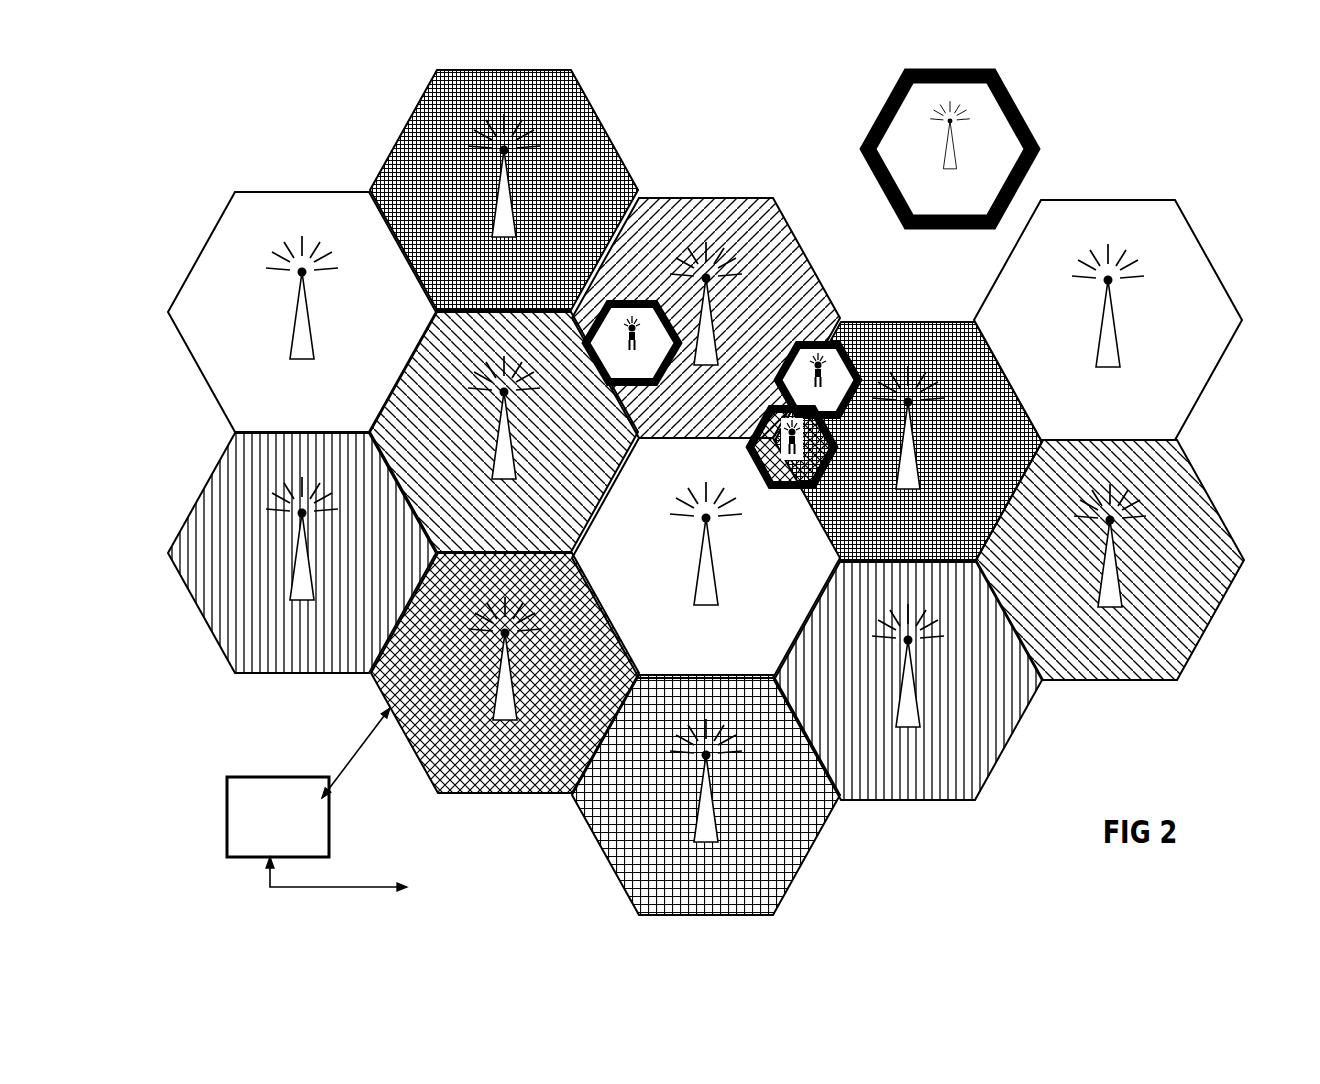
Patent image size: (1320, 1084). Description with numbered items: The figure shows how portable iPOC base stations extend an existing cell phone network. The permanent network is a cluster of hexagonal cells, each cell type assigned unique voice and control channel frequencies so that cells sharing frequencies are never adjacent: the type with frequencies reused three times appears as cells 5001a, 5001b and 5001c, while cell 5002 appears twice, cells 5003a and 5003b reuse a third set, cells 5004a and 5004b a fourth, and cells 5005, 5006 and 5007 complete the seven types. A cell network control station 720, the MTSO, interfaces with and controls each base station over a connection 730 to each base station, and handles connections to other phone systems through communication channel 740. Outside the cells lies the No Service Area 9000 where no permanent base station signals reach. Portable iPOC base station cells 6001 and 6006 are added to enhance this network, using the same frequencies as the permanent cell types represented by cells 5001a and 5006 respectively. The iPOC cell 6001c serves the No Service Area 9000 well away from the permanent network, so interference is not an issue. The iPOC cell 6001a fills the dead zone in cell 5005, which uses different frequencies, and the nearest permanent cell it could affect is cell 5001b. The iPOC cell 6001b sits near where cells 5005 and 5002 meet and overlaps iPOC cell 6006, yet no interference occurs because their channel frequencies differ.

The cell 5001a is at (336, 417).
The cell 5001b is at (742, 663).
The cell 5001c is at (1142, 425).
The cell 5002 is at (476, 295).
The cell 5003a is at (542, 537).
The cell 5003b is at (1145, 665).
The cell 5004a is at (338, 658).
The cell 5004b is at (944, 785).
The cell 5005 is at (678, 423).
The cell 5006 is at (478, 778).
The cell 5007 is at (678, 900).
The iPOC base station cell 6001 is at (802, 345).
The iPOC base station cell 6001a is at (612, 374).
The iPOC base station cell 6001b is at (800, 413).
The iPOC base station cell 6001c is at (925, 205).
The iPOC base station cell 6006 is at (778, 482).
The No Service Area 9000 is at (1143, 162).
The cell network control station 720 is at (258, 843).
The connection to each base station 730 is at (345, 758).
The communication channel 740 is at (367, 875).